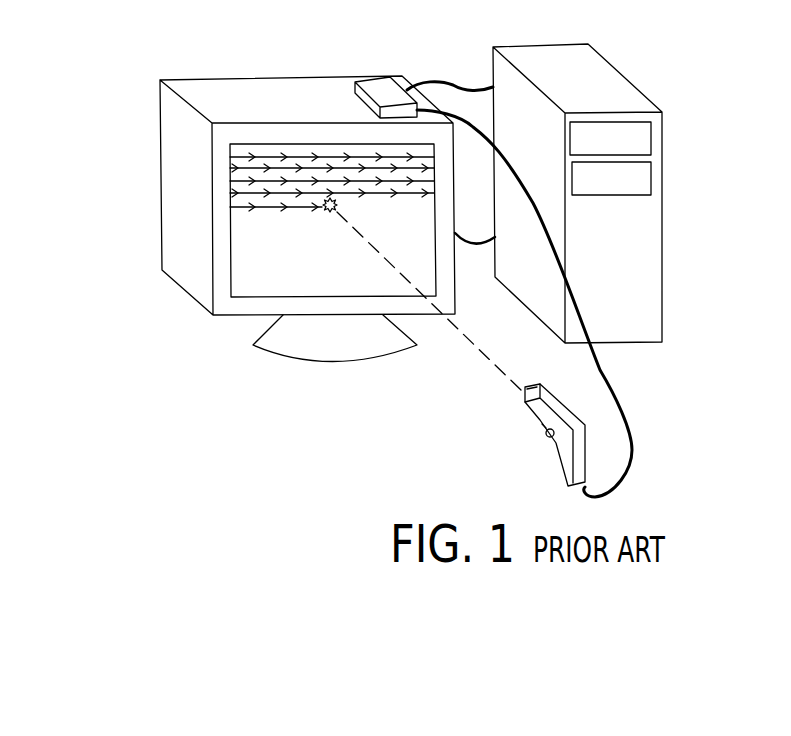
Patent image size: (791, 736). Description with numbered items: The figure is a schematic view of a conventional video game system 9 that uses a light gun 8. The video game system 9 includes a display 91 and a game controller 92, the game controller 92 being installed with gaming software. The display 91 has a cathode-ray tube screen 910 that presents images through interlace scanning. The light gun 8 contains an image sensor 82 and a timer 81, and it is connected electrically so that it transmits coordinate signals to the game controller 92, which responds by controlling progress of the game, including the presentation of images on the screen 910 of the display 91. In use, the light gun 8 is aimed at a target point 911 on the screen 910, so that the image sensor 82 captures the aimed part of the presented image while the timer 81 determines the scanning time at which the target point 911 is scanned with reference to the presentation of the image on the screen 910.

The video game system 9 is at (145, 70).
The display 91 is at (287, 90).
The cathode-ray tube screen 910 is at (238, 223).
The target point 911 is at (327, 212).
The game controller 92 is at (605, 77).
The light gun 8 is at (500, 418).
The timer 81 is at (528, 425).
The image sensor 82 is at (525, 390).